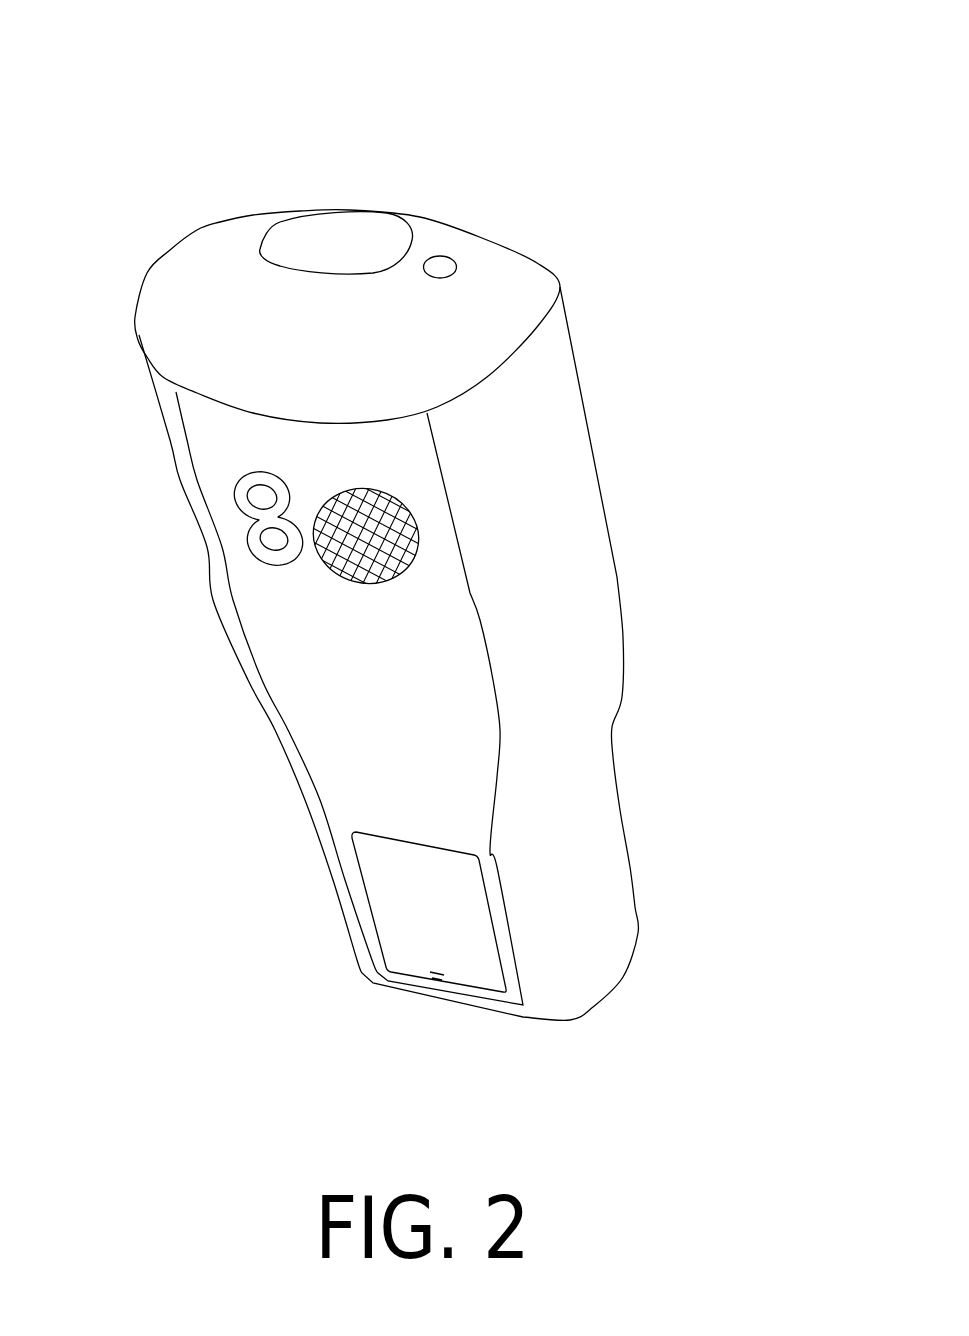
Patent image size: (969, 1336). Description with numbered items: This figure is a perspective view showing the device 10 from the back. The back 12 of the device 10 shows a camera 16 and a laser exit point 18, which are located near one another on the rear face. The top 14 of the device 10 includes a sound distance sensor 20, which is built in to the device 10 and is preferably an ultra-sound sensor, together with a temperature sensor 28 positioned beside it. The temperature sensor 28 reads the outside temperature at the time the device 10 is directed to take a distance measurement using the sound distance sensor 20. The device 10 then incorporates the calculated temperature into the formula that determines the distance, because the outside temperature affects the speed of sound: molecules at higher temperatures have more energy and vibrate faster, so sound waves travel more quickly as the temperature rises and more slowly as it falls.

The device 10 is at (442, 530).
The back 12 is at (581, 863).
The top 14 is at (297, 244).
The camera 16 is at (171, 558).
The laser exit point 18 is at (186, 636).
The sound distance sensor 20 is at (415, 157).
The temperature sensor 28 is at (526, 189).